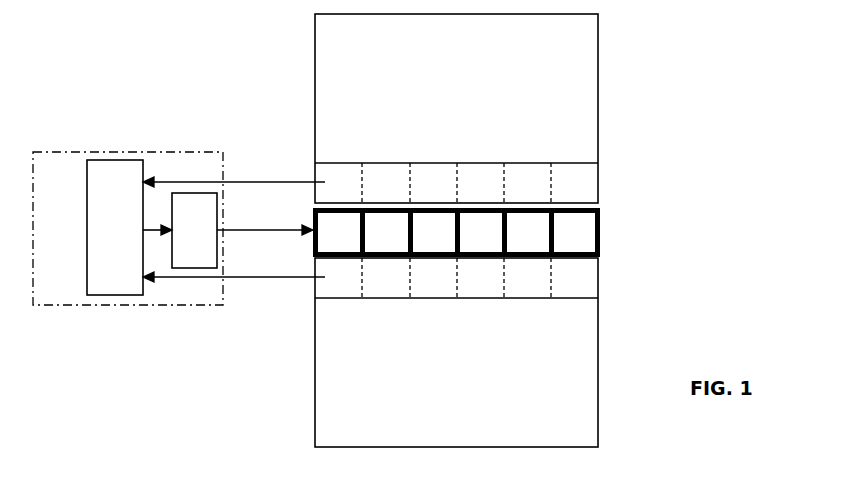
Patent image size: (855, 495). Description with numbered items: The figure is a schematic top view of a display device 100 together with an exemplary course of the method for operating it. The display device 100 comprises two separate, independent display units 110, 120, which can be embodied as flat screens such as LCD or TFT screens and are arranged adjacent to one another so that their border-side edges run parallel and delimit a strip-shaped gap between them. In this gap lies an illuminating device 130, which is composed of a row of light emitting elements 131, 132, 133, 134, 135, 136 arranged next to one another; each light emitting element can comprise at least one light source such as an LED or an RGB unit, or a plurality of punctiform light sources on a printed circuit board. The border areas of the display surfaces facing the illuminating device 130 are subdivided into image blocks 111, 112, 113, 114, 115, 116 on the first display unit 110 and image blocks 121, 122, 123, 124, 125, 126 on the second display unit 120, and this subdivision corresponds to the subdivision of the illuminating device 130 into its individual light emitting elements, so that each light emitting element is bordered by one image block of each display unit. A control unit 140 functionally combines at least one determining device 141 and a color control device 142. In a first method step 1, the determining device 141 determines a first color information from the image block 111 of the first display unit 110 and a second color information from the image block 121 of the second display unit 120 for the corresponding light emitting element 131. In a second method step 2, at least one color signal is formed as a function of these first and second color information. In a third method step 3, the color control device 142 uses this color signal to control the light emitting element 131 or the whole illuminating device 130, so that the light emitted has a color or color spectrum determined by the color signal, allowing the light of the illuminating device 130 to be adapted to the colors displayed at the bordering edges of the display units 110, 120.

The display device 100 is at (666, 101).
The first display unit 110 is at (456, 108).
The image block 111 is at (338, 183).
The image block 112 is at (386, 183).
The image block 113 is at (433, 183).
The image block 114 is at (480, 183).
The image block 115 is at (527, 183).
The image block 116 is at (574, 183).
The second display unit 120 is at (456, 352).
The image block 121 is at (338, 278).
The image block 122 is at (386, 278).
The image block 123 is at (433, 278).
The image block 124 is at (480, 278).
The image block 125 is at (527, 278).
The image block 126 is at (574, 278).
The illuminating device 130 is at (600, 244).
The light emitting element 131 is at (339, 232).
The light emitting element 132 is at (386, 232).
The light emitting element 133 is at (434, 232).
The light emitting element 134 is at (481, 232).
The light emitting element 135 is at (528, 232).
The light emitting element 136 is at (574, 232).
The control unit 140 is at (128, 228).
The determining device 141 is at (115, 227).
The color control device 142 is at (194, 230).
The first method step 1 is at (234, 229).
The second method step 2 is at (176, 306).
The third method step 3 is at (228, 217).